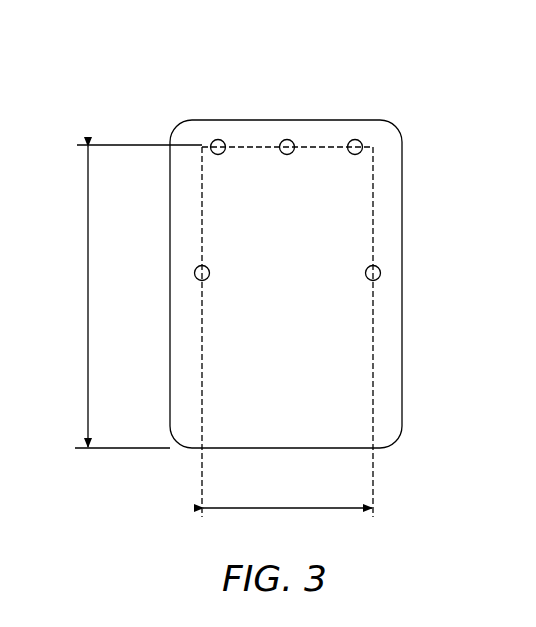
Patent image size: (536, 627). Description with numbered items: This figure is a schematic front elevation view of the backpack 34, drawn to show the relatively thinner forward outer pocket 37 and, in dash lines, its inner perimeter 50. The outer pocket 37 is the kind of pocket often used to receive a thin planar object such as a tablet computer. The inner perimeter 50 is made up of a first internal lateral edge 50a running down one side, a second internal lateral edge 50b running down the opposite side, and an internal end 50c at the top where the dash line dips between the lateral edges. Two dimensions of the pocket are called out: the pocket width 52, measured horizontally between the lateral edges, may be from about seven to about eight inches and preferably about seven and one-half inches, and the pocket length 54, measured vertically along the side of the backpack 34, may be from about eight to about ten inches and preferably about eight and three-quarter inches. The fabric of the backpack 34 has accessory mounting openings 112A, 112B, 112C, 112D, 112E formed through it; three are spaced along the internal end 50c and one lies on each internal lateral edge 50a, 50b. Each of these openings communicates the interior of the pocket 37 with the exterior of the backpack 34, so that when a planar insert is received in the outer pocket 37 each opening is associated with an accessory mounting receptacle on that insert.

The backpack 34 is at (152, 463).
The forward outer pocket 37 is at (275, 411).
The inner perimeter 50 is at (206, 318).
The first internal lateral edge 50a is at (203, 220).
The second internal lateral edge 50b is at (373, 225).
The internal end 50c is at (268, 147).
The pocket width 52 is at (262, 508).
The pocket length 54 is at (87, 240).
The accessory mounting opening 112A is at (195, 272).
The accessory mounting opening 112B is at (218, 139).
The accessory mounting opening 112C is at (287, 139).
The accessory mounting opening 112D is at (358, 140).
The accessory mounting opening 112E is at (381, 272).